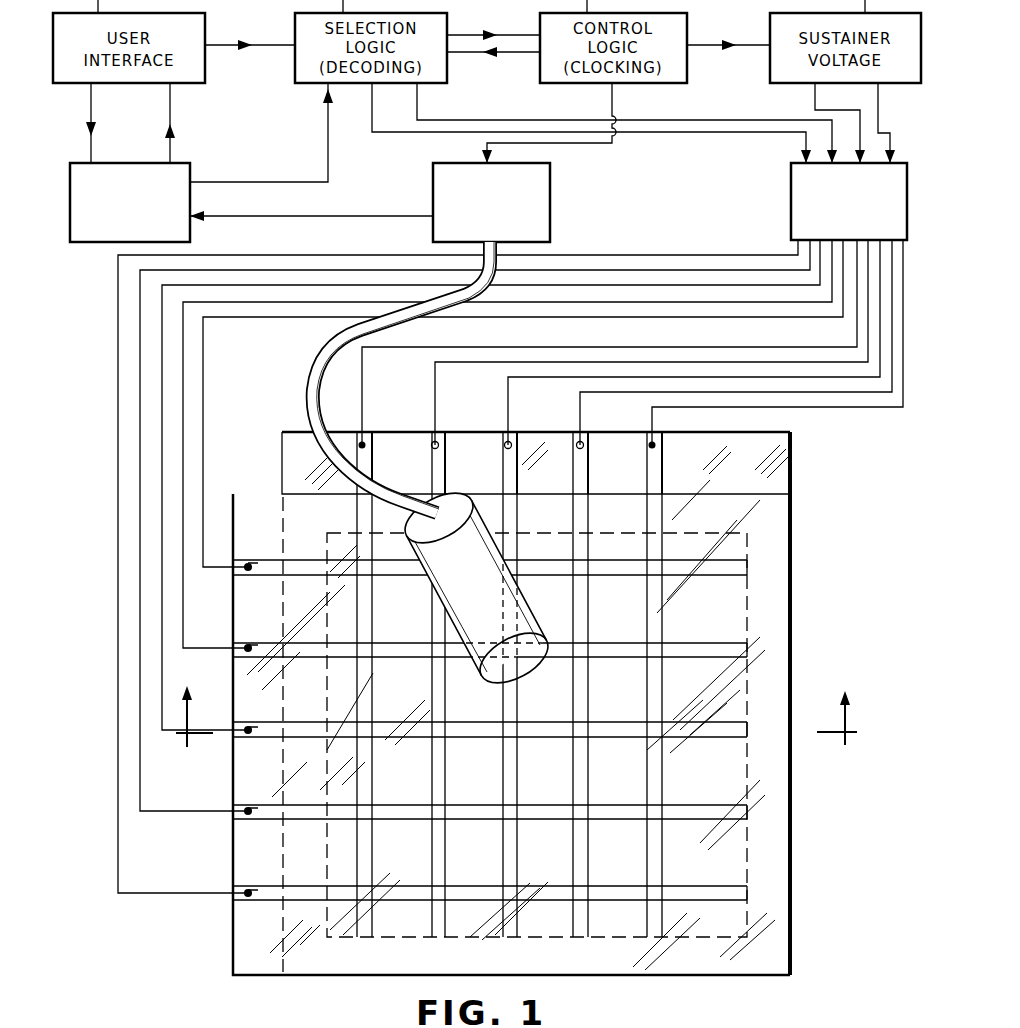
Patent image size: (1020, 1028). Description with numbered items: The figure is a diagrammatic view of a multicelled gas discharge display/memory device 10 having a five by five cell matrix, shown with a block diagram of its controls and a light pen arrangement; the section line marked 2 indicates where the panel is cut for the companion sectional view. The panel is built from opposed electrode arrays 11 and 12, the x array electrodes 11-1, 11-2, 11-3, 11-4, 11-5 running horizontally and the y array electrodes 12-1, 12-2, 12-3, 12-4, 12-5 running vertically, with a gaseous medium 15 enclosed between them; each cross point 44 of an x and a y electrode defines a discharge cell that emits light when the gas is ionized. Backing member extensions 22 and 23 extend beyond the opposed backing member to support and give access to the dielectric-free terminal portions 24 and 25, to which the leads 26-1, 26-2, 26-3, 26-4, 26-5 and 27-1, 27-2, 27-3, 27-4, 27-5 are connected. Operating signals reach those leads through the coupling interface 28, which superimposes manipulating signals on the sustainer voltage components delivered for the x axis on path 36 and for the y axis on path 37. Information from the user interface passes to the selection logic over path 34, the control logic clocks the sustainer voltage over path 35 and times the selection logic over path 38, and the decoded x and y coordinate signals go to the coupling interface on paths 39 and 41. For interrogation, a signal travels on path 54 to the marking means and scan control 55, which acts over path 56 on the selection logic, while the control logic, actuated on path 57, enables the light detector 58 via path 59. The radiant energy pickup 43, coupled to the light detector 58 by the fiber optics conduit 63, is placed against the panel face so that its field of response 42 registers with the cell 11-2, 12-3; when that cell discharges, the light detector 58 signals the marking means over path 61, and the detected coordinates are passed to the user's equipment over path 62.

The multicelled gas discharge display/memory device 10 is at (812, 451).
The x electrode array 11 is at (456, 737).
The x array electrode 11-1 is at (637, 560).
The x array electrode 11-2 is at (633, 643).
The x array electrode 11-3 is at (637, 722).
The x array electrode 11-4 is at (637, 805).
The x array electrode 11-5 is at (637, 900).
The y electrode array 12 is at (534, 659).
The y array electrode 12-1 is at (372, 850).
The y array electrode 12-2 is at (446, 858).
The y array electrode 12-3 is at (518, 863).
The y array electrode 12-4 is at (590, 852).
The y array electrode 12-5 is at (663, 867).
The gaseous medium 15 is at (748, 858).
The backing member extension 22 is at (262, 968).
The backing member extension 23 is at (292, 440).
The terminal portions 24 is at (268, 563).
The terminal portions 25 is at (501, 457).
The x electrode lead 26-1 is at (203, 444).
The x electrode lead 26-2 is at (183, 468).
The x electrode lead 26-3 is at (162, 505).
The x electrode lead 26-4 is at (140, 540).
The x electrode lead 26-5 is at (118, 575).
The y electrode lead 27-1 is at (364, 395).
The y electrode lead 27-2 is at (437, 411).
The y electrode lead 27-3 is at (506, 390).
The y electrode lead 27-4 is at (582, 406).
The y electrode lead 27-5 is at (655, 418).
The coupling interface 28 is at (791, 200).
The path 34 is at (266, 44).
The path 35 is at (745, 42).
The path 36 is at (815, 108).
The path 37 is at (878, 108).
The path 38 is at (507, 57).
The path 39 is at (372, 107).
The path 41 is at (420, 105).
The field of response 42 is at (527, 660).
The radiant energy pickup 43 is at (455, 597).
The cross point 44 is at (583, 660).
The path 54 is at (88, 112).
The marking means and scan control 55 is at (88, 243).
The path 56 is at (328, 150).
The path 57 is at (518, 33).
The light detector 58 is at (550, 212).
The path 59 is at (588, 143).
The path 61 is at (327, 220).
The path 62 is at (172, 107).
The fiber optics conduit 63 is at (312, 374).
The section line 2- 2 is at (516, 733).